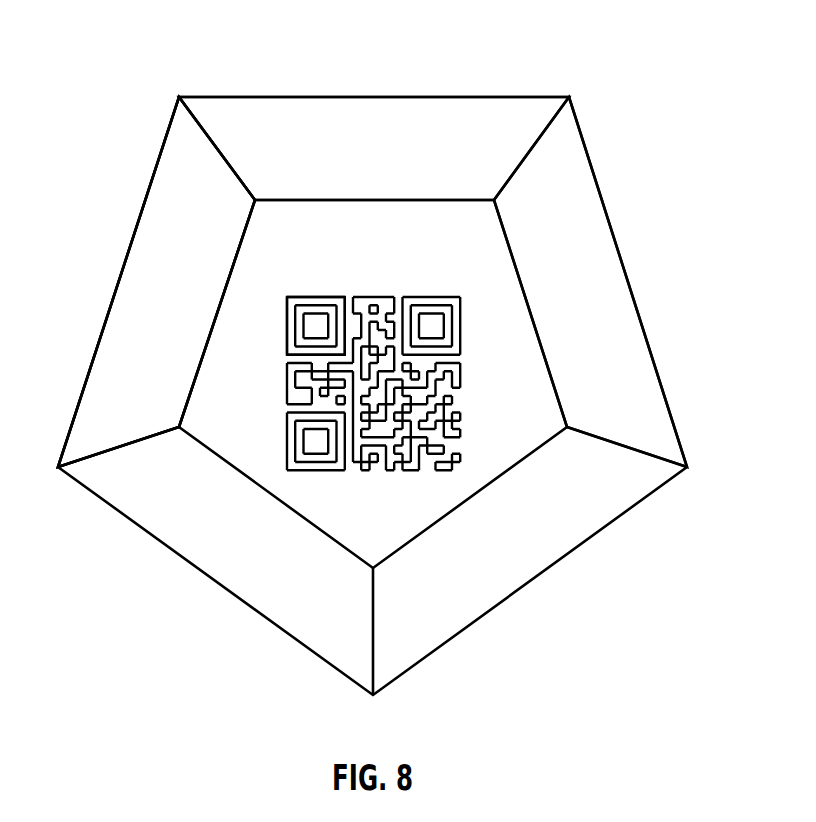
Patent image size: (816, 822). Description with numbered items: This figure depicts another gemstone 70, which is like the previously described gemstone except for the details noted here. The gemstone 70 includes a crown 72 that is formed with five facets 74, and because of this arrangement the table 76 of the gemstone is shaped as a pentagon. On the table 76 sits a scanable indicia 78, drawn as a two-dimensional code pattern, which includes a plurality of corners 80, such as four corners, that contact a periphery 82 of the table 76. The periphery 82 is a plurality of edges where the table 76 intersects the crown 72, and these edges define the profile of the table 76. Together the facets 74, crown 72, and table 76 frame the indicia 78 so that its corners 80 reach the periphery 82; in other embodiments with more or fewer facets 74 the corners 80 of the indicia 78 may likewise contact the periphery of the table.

The gemstone 70 is at (128, 51).
The crown 72 is at (138, 314).
The facets 74 is at (236, 117).
The table 76 is at (420, 229).
The scanable indicia 78 is at (308, 470).
The corners 80 is at (287, 327).
The periphery 82 is at (528, 307).